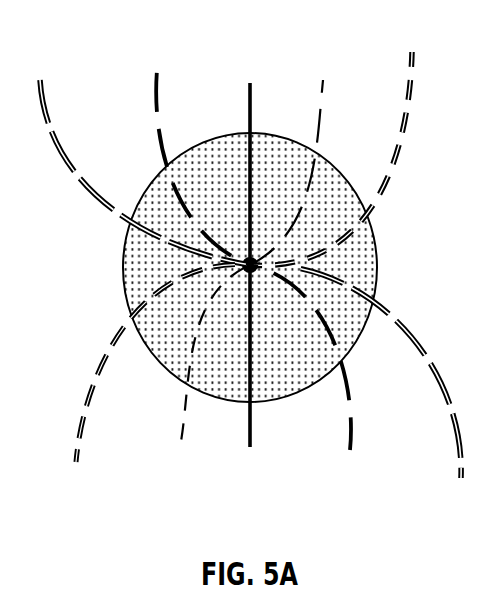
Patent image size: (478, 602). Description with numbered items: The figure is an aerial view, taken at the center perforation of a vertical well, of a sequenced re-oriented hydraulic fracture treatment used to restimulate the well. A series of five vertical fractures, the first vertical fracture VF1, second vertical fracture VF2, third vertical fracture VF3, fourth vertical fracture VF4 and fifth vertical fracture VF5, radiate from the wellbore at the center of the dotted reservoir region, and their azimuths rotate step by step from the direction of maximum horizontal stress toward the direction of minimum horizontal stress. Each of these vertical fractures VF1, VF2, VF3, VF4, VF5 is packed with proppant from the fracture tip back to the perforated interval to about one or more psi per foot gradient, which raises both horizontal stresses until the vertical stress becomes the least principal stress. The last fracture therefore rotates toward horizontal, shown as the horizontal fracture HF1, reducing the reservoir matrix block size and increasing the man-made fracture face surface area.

The vertical fracture 1 VF1 is at (250, 243).
The vertical fracture 2 VF2 is at (266, 243).
The vertical fracture 3 VF3 is at (238, 239).
The vertical fracture 4 VF4 is at (259, 235).
The vertical fracture 5 VF5 is at (131, 150).
The horizontal fracture 1 HF1 is at (292, 305).